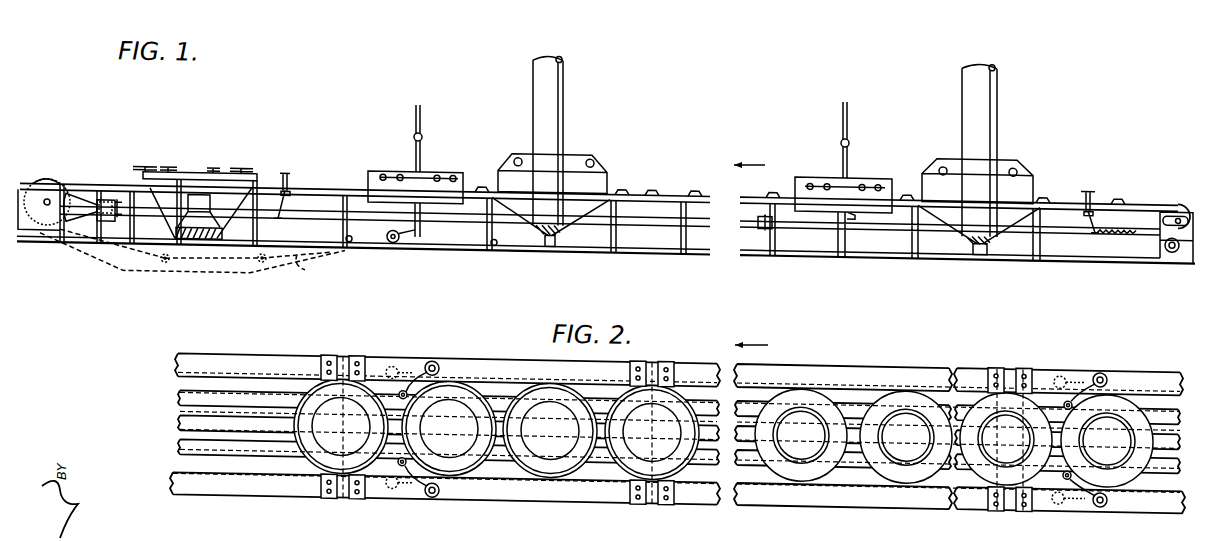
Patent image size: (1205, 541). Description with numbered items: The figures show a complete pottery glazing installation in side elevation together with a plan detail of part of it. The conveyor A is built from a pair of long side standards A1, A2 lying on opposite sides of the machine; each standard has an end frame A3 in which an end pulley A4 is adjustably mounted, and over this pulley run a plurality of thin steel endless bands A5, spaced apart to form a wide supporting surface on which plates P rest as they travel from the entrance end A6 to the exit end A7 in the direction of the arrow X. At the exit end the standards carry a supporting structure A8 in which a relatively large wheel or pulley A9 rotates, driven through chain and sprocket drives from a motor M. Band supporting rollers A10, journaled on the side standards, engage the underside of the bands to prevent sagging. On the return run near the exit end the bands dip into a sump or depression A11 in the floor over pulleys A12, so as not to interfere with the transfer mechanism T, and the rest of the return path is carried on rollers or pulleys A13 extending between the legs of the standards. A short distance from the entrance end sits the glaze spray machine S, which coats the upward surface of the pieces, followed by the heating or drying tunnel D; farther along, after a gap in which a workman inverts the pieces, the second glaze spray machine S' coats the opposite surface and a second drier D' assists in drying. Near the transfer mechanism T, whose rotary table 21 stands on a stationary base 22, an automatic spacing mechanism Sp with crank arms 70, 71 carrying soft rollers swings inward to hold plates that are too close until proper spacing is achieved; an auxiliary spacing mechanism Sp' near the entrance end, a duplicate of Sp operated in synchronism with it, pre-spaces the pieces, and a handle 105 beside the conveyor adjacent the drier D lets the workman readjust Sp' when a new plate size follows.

In FIG. 1, the exit end A7 is at (46, 170).
In FIG. 1, the wheel or pulley A9 is at (53, 179).
In FIG. 1, the rotary table 21 is at (178, 172).
In FIG. 1, the transfer mechanism T is at (219, 168).
In FIG. 1, the automatic spacing mechanism Sp is at (285, 185).
In FIG. 2, the automatic spacing mechanism Sp is at (412, 414).
In FIG. 1, the supporting structure A8 is at (38, 217).
In FIG. 1, the motor M is at (103, 216).
In FIG. 1, the stationary base 22 is at (205, 236).
In FIG. 1, the pulleys A12 is at (163, 259).
In FIG. 1, the sump or depression A11 is at (192, 256).
In FIG. 1, the endless belts, bands or tapes A5 is at (344, 236).
In FIG. 2, the endless belts, bands or tapes A5 is at (188, 423).
In FIG. 1, the rollers or pulleys A13 is at (352, 234).
In FIG. 1, the second drier D' is at (415, 174).
In FIG. 1, the second glaze spray machine S' is at (553, 151).
In FIG. 1, the conveyor A is at (644, 182).
In FIG. 1, the side standard A1 is at (700, 189).
In FIG. 2, the side standard A1 is at (227, 356).
In FIG. 1, the handle 105 is at (760, 213).
In FIG. 1, the arrow X is at (749, 157).
In FIG. 1, the band supporting rollers A10 is at (783, 170).
In FIG. 2, the band supporting rollers A10 is at (340, 356).
In FIG. 1, the heating or drying tunnel D is at (843, 160).
In FIG. 1, the glaze spray machine S is at (979, 159).
In FIG. 1, the auxiliary spacing mechanism Sp' is at (1108, 202).
In FIG. 2, the auxiliary spacing mechanism Sp' is at (1079, 424).
In FIG. 1, the entrance end A6 is at (1178, 160).
In FIG. 1, the end pulley A4 is at (1174, 183).
In FIG. 1, the end frame A3 is at (1165, 231).
In FIG. 2, the side standard A2 is at (223, 481).
In FIG. 2, the crank arm 70 is at (411, 379).
In FIG. 2, the crank arm 71 is at (417, 470).
In FIG. 2, the plates P is at (873, 393).